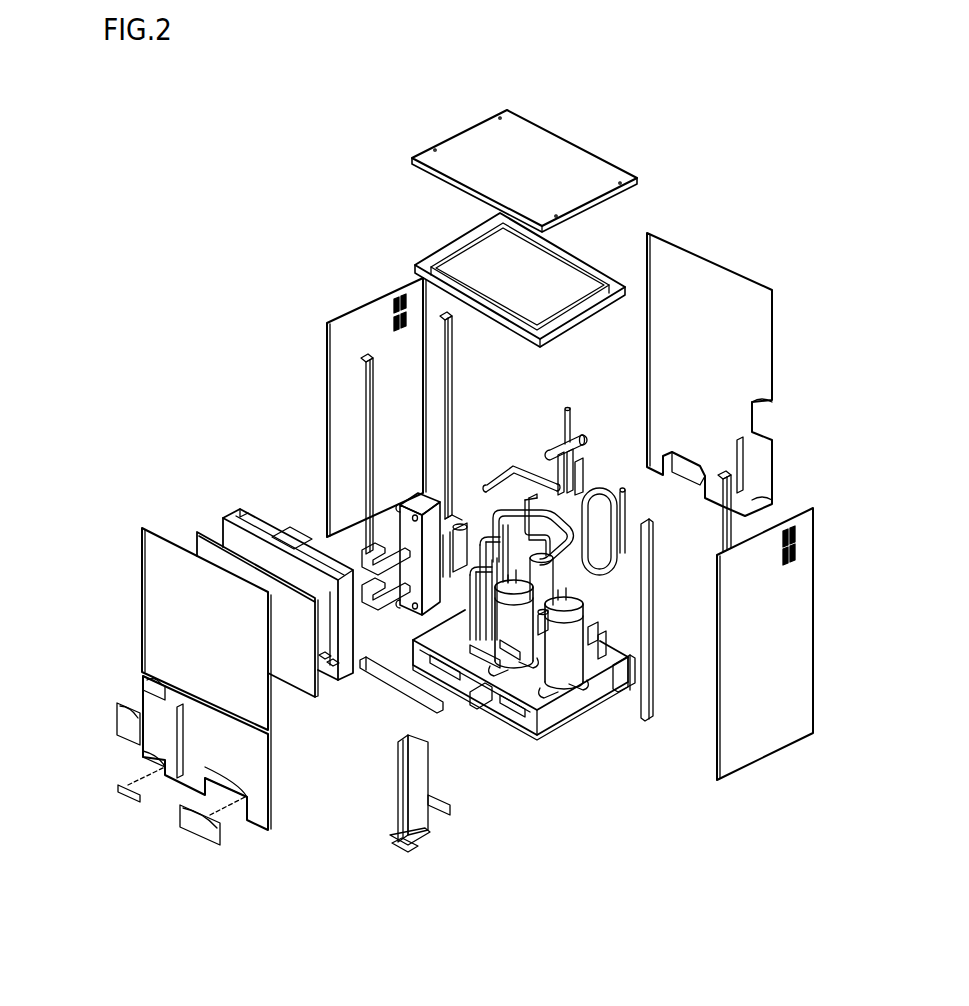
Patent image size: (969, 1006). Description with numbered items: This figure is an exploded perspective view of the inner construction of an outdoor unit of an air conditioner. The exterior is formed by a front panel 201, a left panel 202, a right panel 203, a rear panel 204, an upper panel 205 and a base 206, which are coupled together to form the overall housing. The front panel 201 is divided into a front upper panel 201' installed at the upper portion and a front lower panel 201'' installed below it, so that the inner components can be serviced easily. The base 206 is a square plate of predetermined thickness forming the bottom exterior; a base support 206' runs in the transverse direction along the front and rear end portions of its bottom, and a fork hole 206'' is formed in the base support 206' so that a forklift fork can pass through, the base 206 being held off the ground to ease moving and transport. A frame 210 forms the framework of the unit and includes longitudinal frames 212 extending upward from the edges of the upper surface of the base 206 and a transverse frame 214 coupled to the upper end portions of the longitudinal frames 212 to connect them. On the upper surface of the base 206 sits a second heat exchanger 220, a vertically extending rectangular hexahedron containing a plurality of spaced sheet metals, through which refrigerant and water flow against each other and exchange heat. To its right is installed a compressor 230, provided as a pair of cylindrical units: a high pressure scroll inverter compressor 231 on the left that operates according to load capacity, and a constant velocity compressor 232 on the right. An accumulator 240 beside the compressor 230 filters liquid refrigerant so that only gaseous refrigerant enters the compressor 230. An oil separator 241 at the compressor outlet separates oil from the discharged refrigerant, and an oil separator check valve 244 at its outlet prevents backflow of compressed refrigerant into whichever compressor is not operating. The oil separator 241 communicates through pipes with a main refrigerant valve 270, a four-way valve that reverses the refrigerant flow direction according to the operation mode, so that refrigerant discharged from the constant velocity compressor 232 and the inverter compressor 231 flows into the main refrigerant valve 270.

The front panel 201 is at (138, 686).
The front upper panel 201' is at (164, 629).
The front lower panel 201'' is at (165, 720).
The left panel 202 is at (352, 338).
The right panel 203 is at (800, 617).
The rear panel 204 is at (757, 302).
The upper panel 205 is at (573, 160).
The base 206 is at (510, 731).
The base support 206' is at (547, 710).
The fork hole 206'' is at (433, 754).
The frame 210 is at (378, 194).
The longitudinal frame 212 is at (447, 318).
The transverse frame 214 is at (430, 253).
The second heat exchanger 220 is at (360, 690).
The compressor 230 is at (600, 810).
The inverter compressor 231 is at (567, 667).
The constant velocity compressor 232 is at (519, 642).
The accumulator 240 is at (572, 566).
The oil separator 241 is at (535, 725).
The oil separator check valve 244 is at (457, 525).
The main refrigerant valve 270 is at (570, 442).